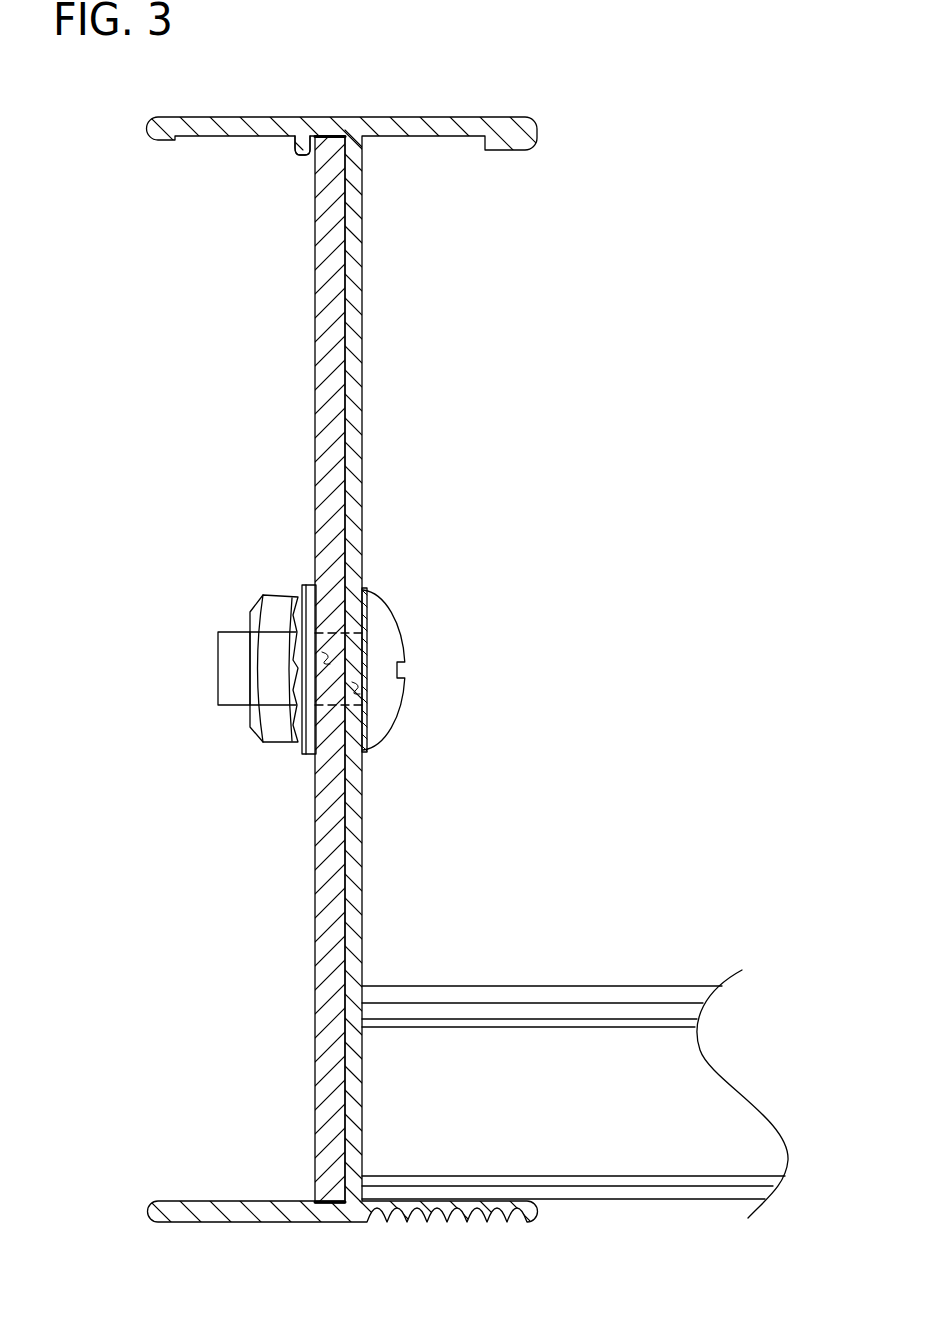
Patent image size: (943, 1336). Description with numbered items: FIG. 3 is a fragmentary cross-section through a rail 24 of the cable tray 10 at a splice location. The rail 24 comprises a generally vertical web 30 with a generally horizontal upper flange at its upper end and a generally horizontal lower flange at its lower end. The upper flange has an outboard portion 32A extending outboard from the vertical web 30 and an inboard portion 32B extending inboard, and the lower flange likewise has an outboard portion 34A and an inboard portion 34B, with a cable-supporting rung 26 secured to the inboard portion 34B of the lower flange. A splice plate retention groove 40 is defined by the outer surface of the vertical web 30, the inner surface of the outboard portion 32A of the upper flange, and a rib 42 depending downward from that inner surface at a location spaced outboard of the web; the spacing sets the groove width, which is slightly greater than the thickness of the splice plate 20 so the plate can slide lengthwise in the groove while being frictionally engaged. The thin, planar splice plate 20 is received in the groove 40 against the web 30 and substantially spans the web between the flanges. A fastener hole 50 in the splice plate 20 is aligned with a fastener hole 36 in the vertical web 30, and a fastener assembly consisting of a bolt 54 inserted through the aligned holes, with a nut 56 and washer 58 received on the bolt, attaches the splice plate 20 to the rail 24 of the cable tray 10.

The cable tray 10 is at (770, 94).
The splice plate 20 is at (324, 437).
The rail 24 is at (374, 307).
The cable-supporting rung 26 is at (606, 993).
The vertical web 30 is at (351, 381).
The outboard portion of upper flange 32A is at (240, 126).
The inboard portion of upper flange 32B is at (455, 125).
The outboard portion of lower flange 34A is at (202, 1213).
The inboard portion of lower flange 34B is at (455, 1210).
The fastener hole 36 is at (367, 677).
The splice plate retention groove 40 is at (325, 126).
The rib 42 is at (304, 152).
The fastener hole 50 is at (318, 635).
The bolt 54 is at (388, 632).
The nut 56 is at (267, 726).
The washer 58 is at (303, 753).